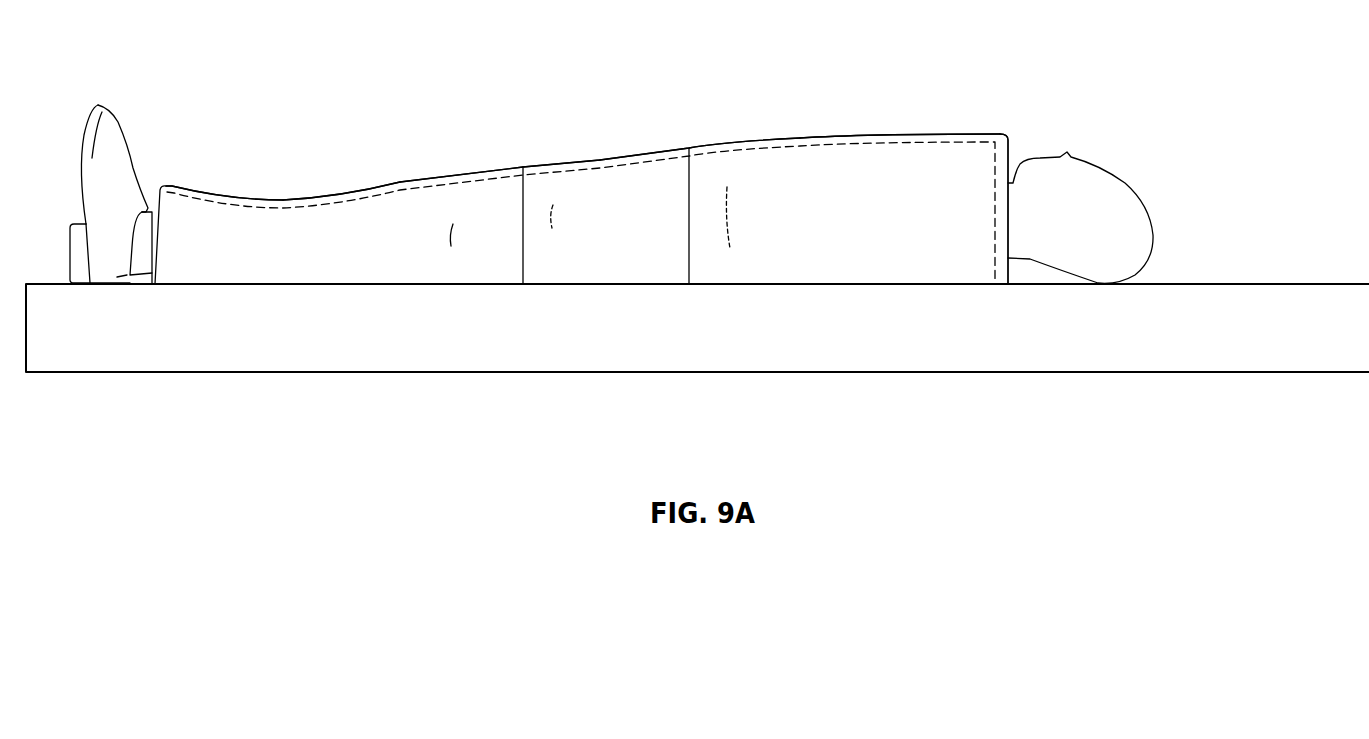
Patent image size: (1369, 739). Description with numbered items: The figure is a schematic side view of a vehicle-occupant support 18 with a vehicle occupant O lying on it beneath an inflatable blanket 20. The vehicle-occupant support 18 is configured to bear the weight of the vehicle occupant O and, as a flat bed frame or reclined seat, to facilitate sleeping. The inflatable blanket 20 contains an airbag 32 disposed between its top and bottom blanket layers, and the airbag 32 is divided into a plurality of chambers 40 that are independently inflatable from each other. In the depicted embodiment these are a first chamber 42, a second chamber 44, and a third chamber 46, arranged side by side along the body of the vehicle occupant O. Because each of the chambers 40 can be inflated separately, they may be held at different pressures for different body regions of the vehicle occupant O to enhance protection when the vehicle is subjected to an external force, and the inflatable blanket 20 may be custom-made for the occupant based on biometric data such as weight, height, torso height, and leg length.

The vehicle-occupant support 18 is at (1298, 350).
The inflatable blanket 20 is at (594, 110).
The airbag 32 is at (203, 205).
The chambers 40 is at (300, 200).
The first chamber 42 is at (950, 132).
The second chamber 44 is at (565, 165).
The third chamber 46 is at (412, 180).
The vehicle occupant O is at (1127, 193).